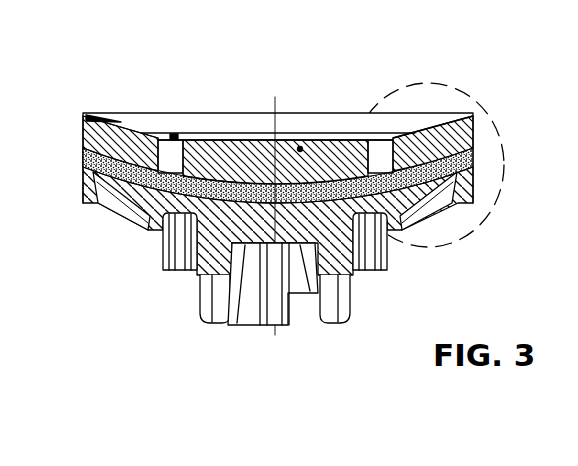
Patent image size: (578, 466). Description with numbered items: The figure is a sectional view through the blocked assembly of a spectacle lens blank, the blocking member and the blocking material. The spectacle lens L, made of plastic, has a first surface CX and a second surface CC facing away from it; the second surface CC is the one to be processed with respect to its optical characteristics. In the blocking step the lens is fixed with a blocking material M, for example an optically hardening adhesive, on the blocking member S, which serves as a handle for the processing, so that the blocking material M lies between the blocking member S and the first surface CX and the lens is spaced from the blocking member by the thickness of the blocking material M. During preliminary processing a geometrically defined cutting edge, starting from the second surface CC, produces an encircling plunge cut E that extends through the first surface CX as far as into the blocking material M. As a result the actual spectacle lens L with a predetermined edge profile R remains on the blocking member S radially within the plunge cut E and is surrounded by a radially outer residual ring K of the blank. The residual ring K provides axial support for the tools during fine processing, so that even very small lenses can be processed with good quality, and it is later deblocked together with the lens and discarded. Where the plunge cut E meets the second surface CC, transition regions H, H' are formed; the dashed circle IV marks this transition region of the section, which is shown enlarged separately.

The residual ring K is at (118, 118).
The blocking material M is at (150, 150).
The transition region H' is at (183, 96).
The plunge cut E is at (197, 132).
The second surface CC is at (256, 139).
The spectacle lens L is at (304, 139).
The transition region H is at (371, 119).
The edge profile R is at (375, 137).
The first surface CX is at (166, 234).
The blocking member S is at (206, 259).
The detail view region IV is at (455, 240).